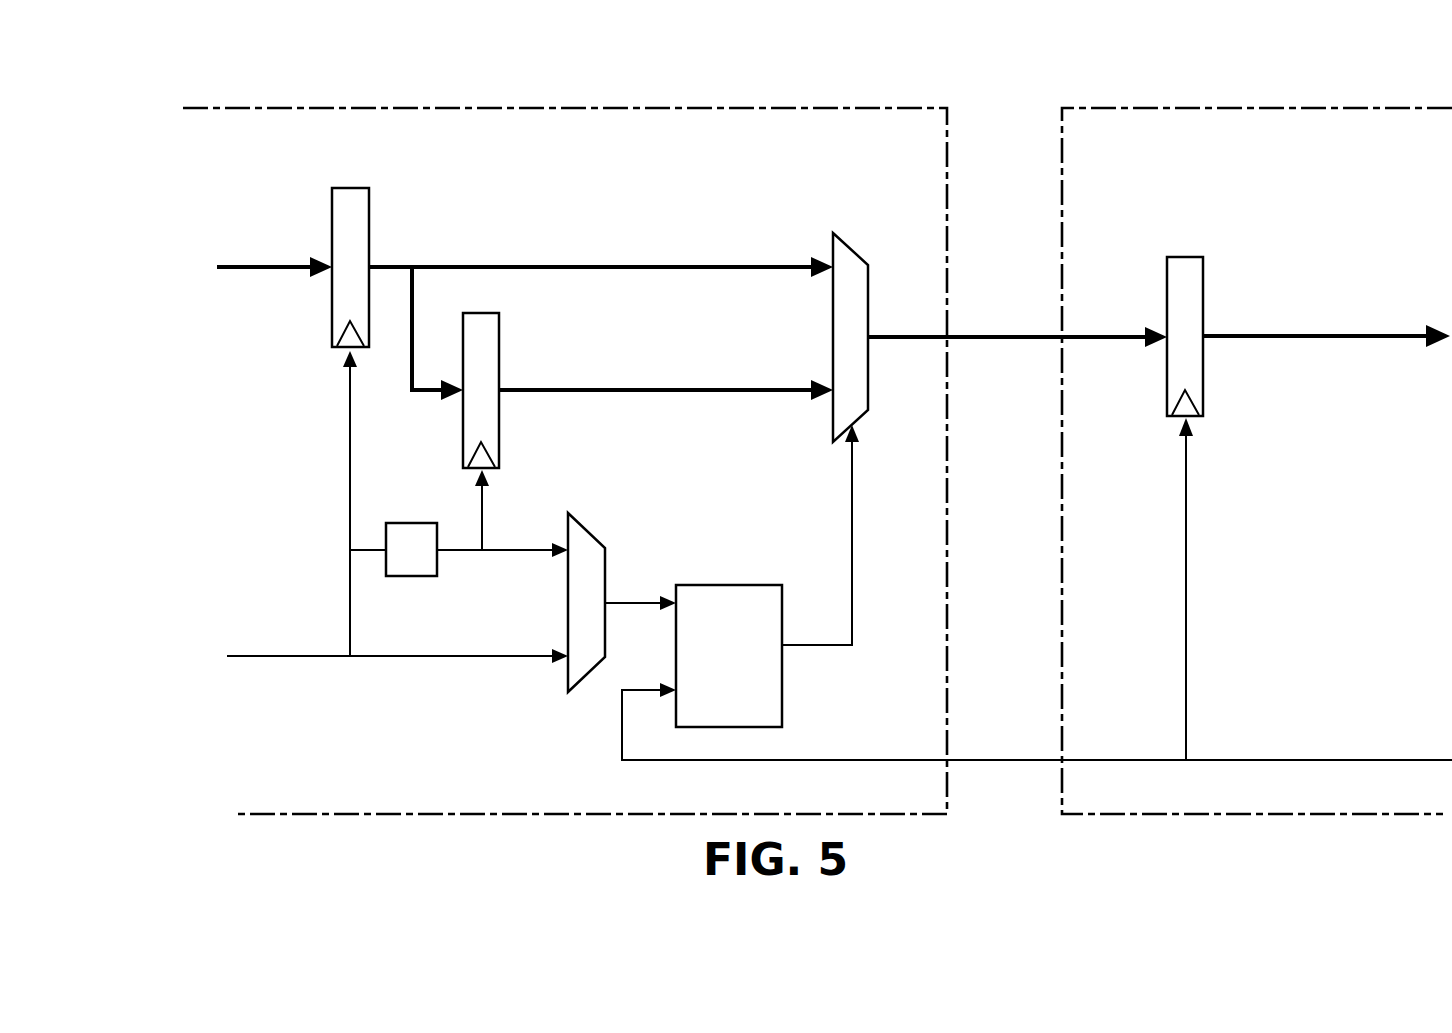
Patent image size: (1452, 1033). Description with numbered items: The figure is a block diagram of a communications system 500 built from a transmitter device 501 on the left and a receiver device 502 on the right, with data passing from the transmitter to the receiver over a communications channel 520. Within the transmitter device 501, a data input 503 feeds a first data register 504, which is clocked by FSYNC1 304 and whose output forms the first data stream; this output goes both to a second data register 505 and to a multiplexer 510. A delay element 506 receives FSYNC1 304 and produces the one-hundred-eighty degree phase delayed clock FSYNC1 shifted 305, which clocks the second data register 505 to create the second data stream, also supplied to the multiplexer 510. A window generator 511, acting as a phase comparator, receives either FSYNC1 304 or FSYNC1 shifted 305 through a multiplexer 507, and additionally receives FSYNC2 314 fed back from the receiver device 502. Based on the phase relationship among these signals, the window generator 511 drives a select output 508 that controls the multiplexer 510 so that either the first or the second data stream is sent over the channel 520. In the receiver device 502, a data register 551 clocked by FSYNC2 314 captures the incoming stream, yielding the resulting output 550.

The communications system 500 is at (1046, 54).
The transmitter device 501 is at (745, 96).
The receiver device 502 is at (1289, 96).
The data input 503 is at (239, 218).
The first data register 504 is at (370, 233).
The second data register 505 is at (500, 365).
The delay element 506 is at (412, 523).
The multiplexer 507 is at (605, 573).
The select output 508 is at (852, 558).
The multiplexer 510 is at (833, 335).
The window generator 511 is at (698, 585).
The communications channel 520 is at (1003, 318).
The output 550 is at (1378, 290).
The data register 551 is at (1203, 300).
The FSYNC1 304 is at (258, 610).
The FSYNC1 shifted 305 is at (482, 575).
The FSYNC2 314 is at (1407, 712).